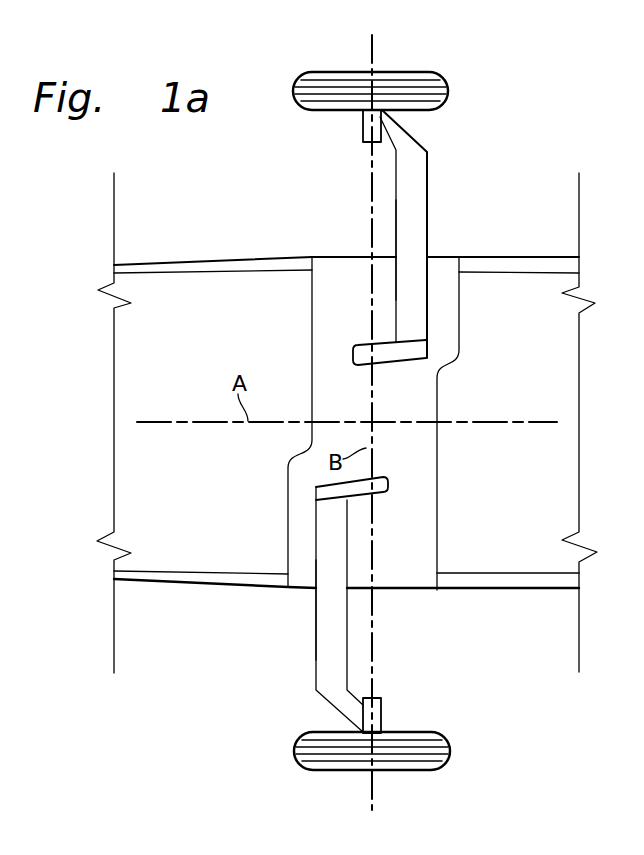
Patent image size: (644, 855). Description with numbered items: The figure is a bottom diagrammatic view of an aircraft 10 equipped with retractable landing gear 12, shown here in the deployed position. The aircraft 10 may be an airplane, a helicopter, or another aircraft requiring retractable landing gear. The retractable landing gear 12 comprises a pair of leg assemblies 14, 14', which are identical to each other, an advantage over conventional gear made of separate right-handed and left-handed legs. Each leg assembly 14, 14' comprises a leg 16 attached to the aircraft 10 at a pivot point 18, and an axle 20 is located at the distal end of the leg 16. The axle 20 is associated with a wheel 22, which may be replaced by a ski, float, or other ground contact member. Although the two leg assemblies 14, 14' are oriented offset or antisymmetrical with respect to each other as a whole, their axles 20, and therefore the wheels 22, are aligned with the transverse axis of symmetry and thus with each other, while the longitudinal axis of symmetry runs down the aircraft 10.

The aircraft 10 is at (580, 120).
The retractable landing gear 12 is at (489, 128).
The leg assembly 14 is at (440, 234).
The leg assembly 14' is at (303, 609).
The leg 16 is at (428, 232).
The pivot point 18 is at (362, 352).
The axle 20 is at (363, 127).
The wheel 22 is at (293, 88).